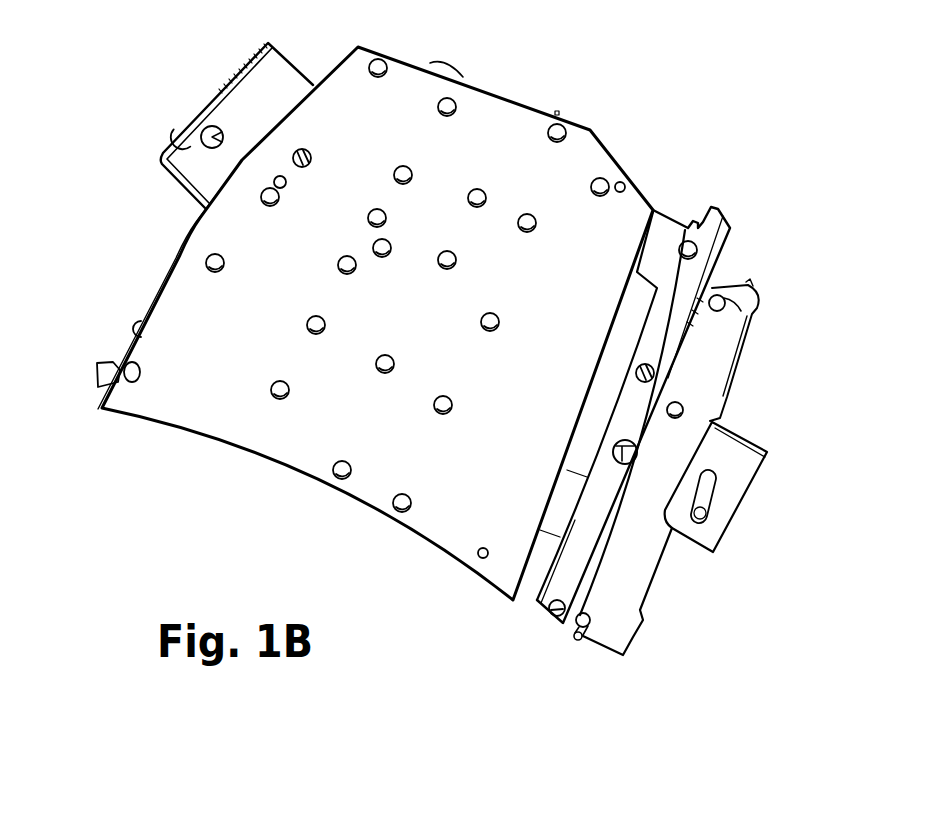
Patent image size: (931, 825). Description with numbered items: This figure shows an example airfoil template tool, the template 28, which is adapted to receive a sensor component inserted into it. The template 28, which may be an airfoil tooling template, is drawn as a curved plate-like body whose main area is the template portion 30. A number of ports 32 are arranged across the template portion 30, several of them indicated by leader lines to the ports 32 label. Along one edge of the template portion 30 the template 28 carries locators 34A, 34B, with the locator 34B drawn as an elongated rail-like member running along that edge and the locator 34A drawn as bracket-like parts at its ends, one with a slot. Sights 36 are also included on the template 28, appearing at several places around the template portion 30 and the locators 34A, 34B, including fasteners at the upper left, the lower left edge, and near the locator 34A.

The template 28 is at (664, 89).
The template portion 30 is at (517, 121).
The ports 32 is at (378, 362).
The locator 34A is at (706, 498).
The locator 34B is at (625, 177).
The sights 36 is at (216, 127).